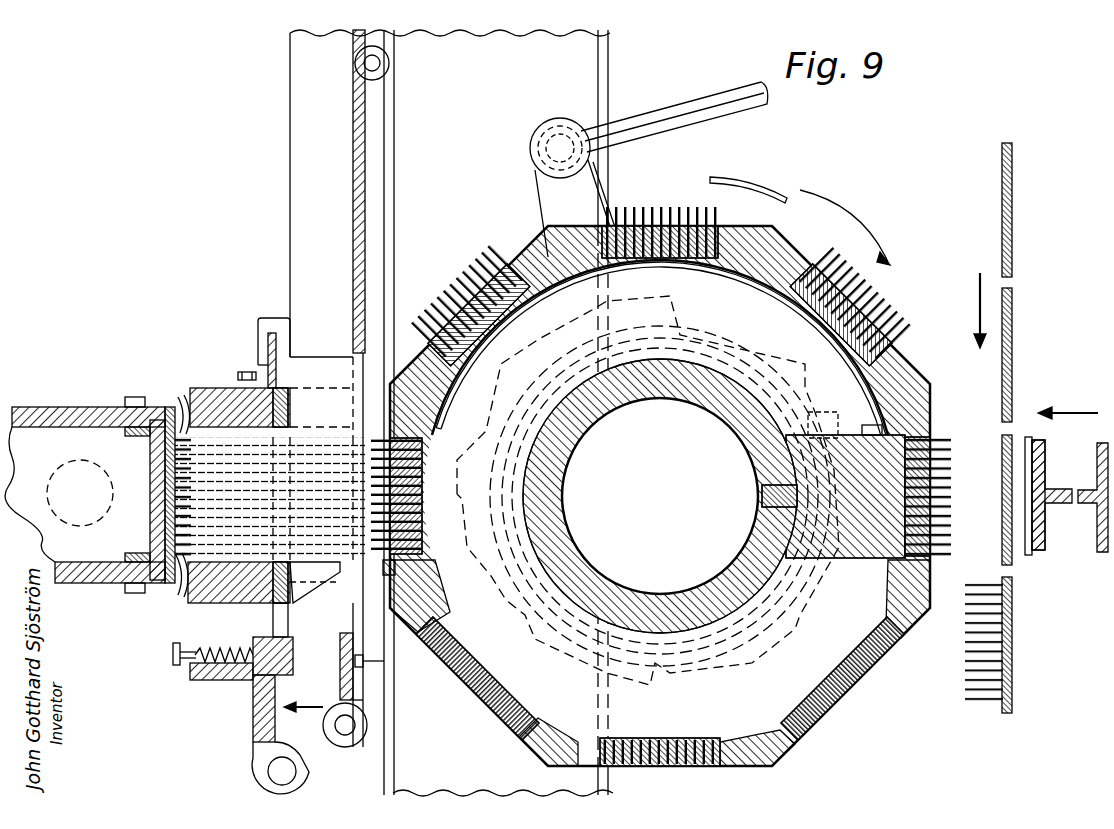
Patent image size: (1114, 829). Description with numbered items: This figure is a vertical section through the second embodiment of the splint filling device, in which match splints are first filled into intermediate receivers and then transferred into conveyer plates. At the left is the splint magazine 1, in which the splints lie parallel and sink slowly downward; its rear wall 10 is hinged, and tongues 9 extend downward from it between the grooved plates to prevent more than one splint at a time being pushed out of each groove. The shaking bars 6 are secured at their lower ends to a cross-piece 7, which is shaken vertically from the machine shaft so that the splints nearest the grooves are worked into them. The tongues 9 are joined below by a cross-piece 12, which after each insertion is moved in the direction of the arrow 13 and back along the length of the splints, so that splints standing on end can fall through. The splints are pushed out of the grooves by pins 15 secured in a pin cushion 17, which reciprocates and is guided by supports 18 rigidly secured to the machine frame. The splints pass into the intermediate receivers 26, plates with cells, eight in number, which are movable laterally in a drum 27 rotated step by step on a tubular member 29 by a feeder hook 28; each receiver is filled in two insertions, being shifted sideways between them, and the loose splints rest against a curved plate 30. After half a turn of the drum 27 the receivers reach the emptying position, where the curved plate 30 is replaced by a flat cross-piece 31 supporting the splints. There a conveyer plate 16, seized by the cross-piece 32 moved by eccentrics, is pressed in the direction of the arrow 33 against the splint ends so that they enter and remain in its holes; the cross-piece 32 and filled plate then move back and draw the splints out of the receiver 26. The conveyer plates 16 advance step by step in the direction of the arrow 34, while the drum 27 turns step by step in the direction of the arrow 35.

The magazine 1 is at (302, 152).
The shaking bars 6 is at (272, 318).
The cross-piece 7 is at (253, 708).
The tongues 9 is at (358, 576).
The rear wall 10 is at (352, 212).
The cross-piece 12 is at (340, 665).
The arrow 13 is at (305, 709).
The pins 15 is at (170, 600).
The conveyer plates 16 is at (1012, 327).
The pin cushion 17 is at (162, 470).
The supports 18 is at (35, 440).
The intermediate receivers 26 is at (414, 486).
The drum 27 is at (757, 240).
The feeder hook 28 is at (647, 490).
The tubular member 29 is at (572, 557).
The curved plate 30 is at (439, 406).
The flat cross-piece 31 is at (853, 560).
The cross-piece 32 is at (1062, 500).
The arrow 33 is at (1065, 407).
The arrow 34 is at (976, 311).
The arrow 35 is at (710, 173).